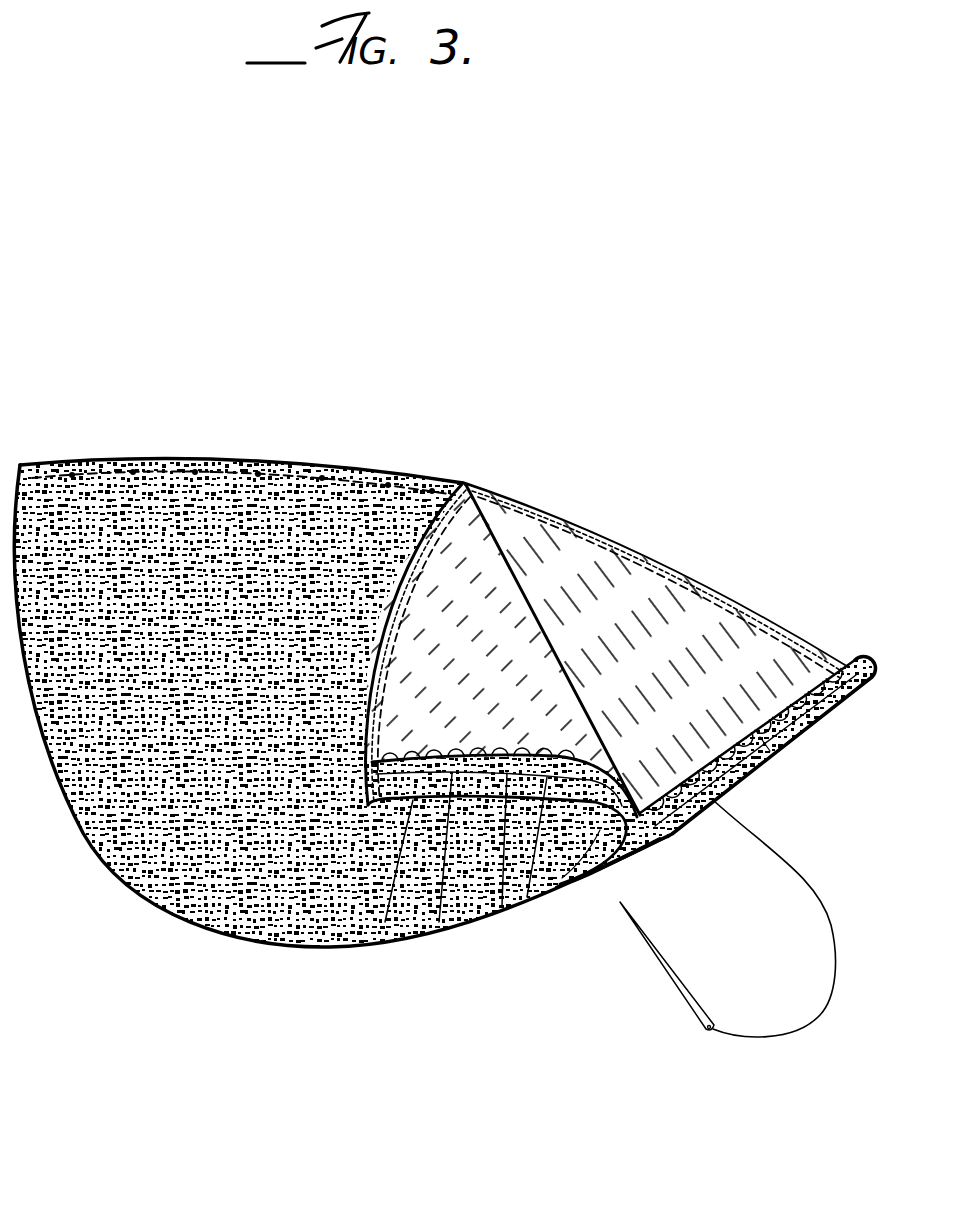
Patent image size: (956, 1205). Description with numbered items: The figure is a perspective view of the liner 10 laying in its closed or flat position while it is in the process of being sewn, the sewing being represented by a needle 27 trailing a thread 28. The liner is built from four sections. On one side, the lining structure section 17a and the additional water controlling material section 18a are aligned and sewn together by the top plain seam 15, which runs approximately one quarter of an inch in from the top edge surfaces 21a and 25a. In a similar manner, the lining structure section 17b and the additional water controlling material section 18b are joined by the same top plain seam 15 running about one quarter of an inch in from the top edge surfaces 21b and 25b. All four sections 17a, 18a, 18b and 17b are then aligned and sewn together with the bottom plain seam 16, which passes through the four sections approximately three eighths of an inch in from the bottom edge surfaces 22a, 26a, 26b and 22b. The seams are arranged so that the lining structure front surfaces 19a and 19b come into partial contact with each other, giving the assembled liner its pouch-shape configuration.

The liner 10 is at (112, 440).
The top plain seam 15 is at (276, 474).
The bottom plain seam 16 is at (573, 878).
The lining structure section 17a is at (378, 946).
The lining structure section 17b is at (731, 739).
The additional water controlling material section 18a is at (472, 505).
The additional water controlling material section 18b is at (670, 600).
The lining structure front surface 19a is at (443, 932).
The lining structure front surface 19b is at (842, 703).
The top edge surface 21a is at (406, 505).
The top edge surface 21b is at (600, 535).
The bottom edge surface 22a is at (502, 912).
The bottom edge surface 22b is at (810, 717).
The top edge surface 25a is at (423, 515).
The top edge surface 25b is at (548, 512).
The bottom edge surface 26a is at (527, 900).
The bottom edge surface 26b is at (787, 757).
The needle 27 is at (700, 1012).
The thread 28 is at (764, 852).